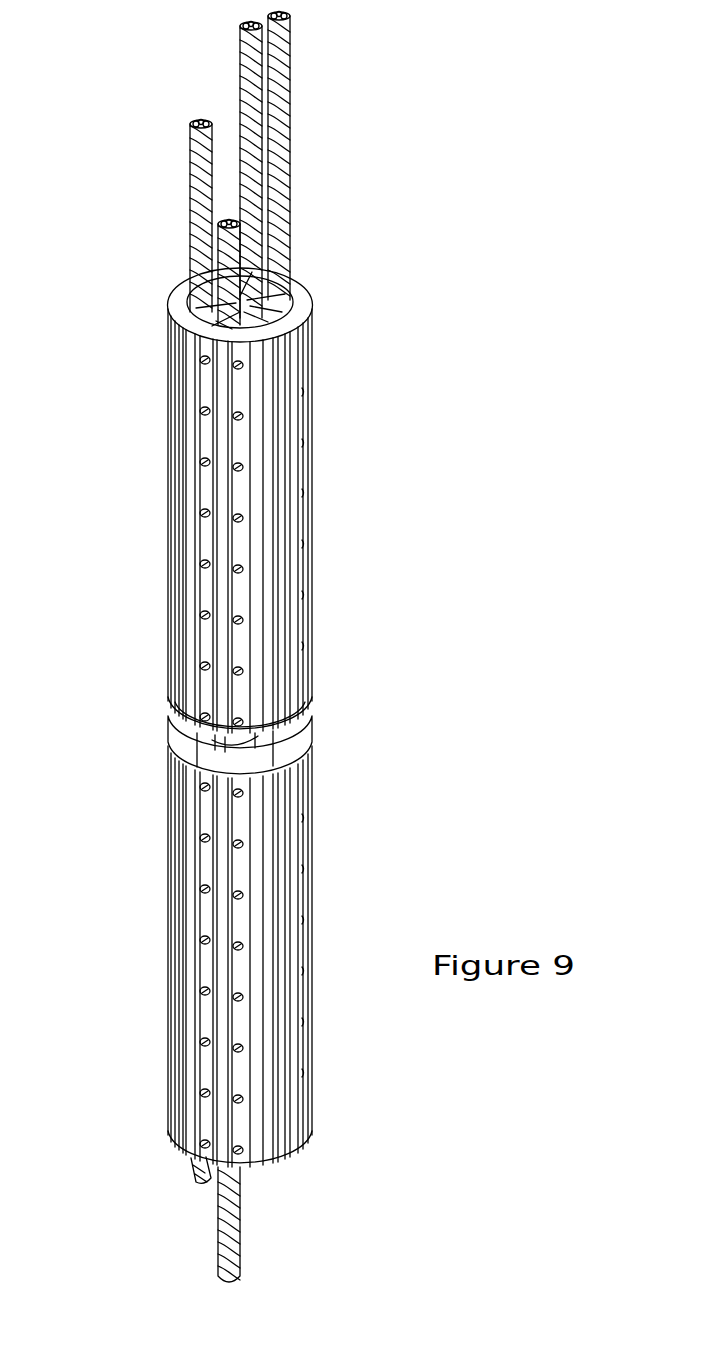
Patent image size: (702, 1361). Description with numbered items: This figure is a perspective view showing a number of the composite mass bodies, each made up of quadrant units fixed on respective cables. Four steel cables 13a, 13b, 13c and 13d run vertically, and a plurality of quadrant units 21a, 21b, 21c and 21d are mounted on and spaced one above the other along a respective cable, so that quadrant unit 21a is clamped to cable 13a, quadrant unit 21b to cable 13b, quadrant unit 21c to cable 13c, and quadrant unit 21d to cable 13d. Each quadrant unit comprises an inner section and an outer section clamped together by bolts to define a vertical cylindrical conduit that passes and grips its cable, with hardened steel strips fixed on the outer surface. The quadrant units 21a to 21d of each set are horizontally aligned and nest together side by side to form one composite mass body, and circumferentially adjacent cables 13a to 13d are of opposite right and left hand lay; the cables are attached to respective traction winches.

The cable 13a is at (291, 92).
The cable 13b is at (462, 238).
The cable 13c is at (115, 138).
The cable 13d is at (117, 53).
The quadrant unit 21a is at (297, 317).
The quadrant unit 21b is at (133, 383).
The quadrant unit 21c is at (108, 290).
The quadrant unit 21d is at (493, 286).